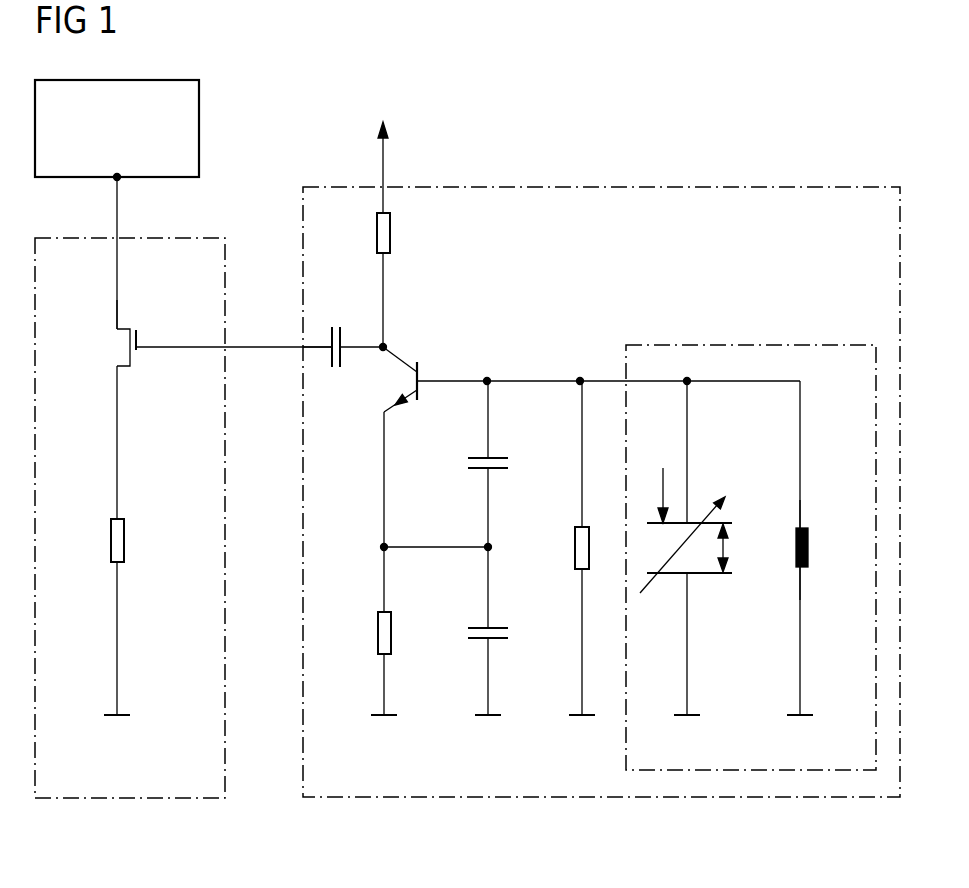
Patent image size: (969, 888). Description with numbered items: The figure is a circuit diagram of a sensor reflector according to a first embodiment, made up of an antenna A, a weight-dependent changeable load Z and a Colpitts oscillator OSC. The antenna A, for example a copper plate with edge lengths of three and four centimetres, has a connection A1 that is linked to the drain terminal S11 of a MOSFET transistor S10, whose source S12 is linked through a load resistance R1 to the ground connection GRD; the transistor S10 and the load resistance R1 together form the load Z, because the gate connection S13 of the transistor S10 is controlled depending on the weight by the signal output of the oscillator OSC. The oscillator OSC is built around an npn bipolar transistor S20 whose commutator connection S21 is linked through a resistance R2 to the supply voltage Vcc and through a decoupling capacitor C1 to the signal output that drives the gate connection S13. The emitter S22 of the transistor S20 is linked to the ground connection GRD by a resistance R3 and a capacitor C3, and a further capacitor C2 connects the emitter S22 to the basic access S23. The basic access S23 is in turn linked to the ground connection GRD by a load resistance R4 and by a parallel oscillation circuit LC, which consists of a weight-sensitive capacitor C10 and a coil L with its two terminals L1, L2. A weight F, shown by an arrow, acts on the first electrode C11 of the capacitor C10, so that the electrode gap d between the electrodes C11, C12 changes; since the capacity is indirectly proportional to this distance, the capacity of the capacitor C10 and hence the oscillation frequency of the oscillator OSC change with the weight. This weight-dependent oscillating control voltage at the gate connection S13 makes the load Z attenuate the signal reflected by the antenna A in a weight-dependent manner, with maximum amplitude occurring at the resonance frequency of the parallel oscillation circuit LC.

The antenna A is at (199, 130).
The connection of the antenna A1 is at (114, 182).
The load Z is at (120, 798).
The MOSFET transistor S10 is at (130, 346).
The drain terminal S11 is at (130, 329).
The source S12 is at (120, 372).
The gate connection S13 is at (140, 350).
The load resistance R1 is at (124, 540).
The ground connection GRD is at (458, 734).
The Colpitts oscillator OSC is at (565, 797).
The supply voltage Vcc is at (383, 153).
The resistance R2 is at (390, 233).
The decoupling capacitor C1 is at (340, 325).
The npn bipolar transistor S20 is at (420, 368).
The commutator connection S21 is at (386, 345).
The emitter S22 is at (386, 415).
The basic access S23 is at (420, 390).
The resistance R3 is at (391, 632).
The further capacitor C2 is at (492, 456).
The capacitor C3 is at (492, 626).
The load resistance R4 is at (575, 547).
The parallel oscillation circuit LC is at (750, 345).
The weight-sensitive capacitor C10 is at (710, 575).
The first electrode C11 is at (689, 515).
The second capacitor electrode C12 is at (684, 578).
The weight F is at (658, 474).
The electrode gap d is at (726, 547).
The coil L is at (808, 547).
The first coil terminal L1 is at (806, 530).
The second coil terminal L2 is at (806, 566).